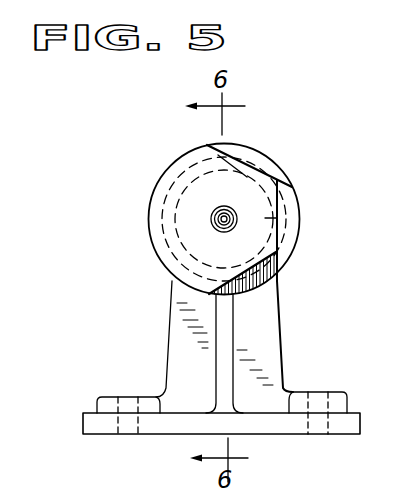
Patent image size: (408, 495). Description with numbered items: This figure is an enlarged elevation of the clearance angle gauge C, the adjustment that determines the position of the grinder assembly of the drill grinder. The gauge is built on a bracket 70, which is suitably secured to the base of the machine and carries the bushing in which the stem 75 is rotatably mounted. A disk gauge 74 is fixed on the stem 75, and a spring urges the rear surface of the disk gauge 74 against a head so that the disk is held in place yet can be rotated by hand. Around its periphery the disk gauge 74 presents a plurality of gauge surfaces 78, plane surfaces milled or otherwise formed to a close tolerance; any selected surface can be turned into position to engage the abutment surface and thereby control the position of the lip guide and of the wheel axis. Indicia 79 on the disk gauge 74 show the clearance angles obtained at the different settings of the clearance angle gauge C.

The bracket 70 is at (260, 332).
The disk gauge 74 is at (160, 192).
The stem 75 is at (211, 220).
The gauge surfaces 78 is at (172, 253).
The indicia 79 is at (247, 177).
The clearance angle gauge C is at (161, 159).